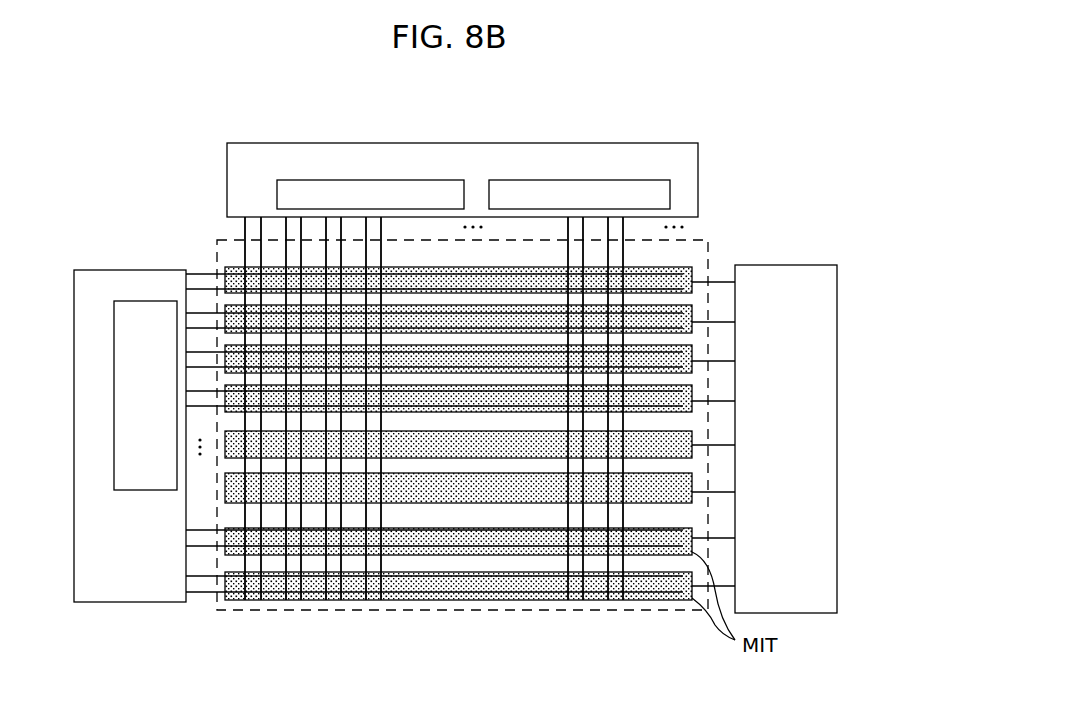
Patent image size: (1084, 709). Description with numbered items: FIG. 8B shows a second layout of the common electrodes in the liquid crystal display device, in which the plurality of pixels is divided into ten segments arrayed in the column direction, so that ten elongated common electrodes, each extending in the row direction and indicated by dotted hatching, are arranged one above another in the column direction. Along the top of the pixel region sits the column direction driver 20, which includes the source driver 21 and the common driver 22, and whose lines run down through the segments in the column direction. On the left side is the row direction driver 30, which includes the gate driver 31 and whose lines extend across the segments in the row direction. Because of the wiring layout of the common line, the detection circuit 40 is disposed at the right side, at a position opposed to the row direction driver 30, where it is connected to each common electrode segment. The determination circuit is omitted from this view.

The column direction driver 20 is at (267, 142).
The source driver 21 is at (423, 175).
The common driver 22 is at (585, 175).
The row direction driver 30 is at (72, 530).
The gate driver 31 is at (113, 405).
The detection circuit 40 is at (752, 263).